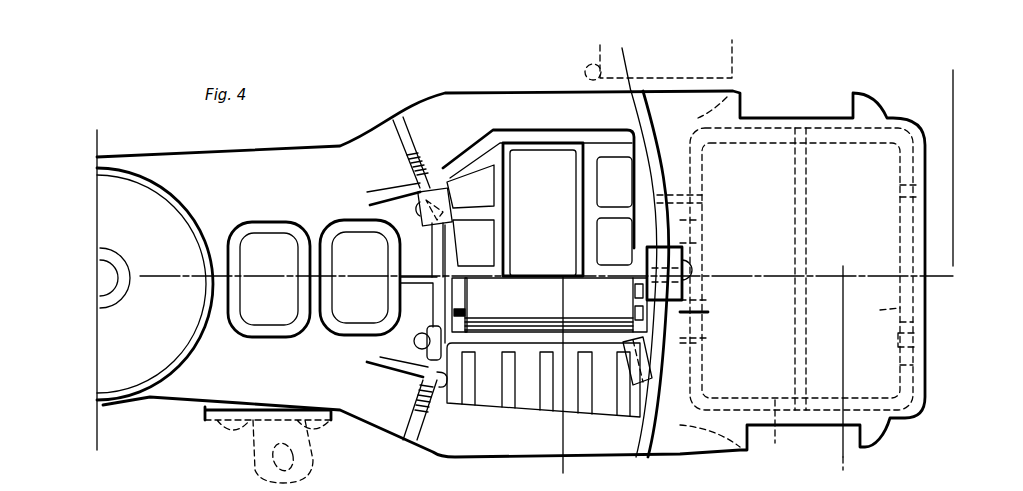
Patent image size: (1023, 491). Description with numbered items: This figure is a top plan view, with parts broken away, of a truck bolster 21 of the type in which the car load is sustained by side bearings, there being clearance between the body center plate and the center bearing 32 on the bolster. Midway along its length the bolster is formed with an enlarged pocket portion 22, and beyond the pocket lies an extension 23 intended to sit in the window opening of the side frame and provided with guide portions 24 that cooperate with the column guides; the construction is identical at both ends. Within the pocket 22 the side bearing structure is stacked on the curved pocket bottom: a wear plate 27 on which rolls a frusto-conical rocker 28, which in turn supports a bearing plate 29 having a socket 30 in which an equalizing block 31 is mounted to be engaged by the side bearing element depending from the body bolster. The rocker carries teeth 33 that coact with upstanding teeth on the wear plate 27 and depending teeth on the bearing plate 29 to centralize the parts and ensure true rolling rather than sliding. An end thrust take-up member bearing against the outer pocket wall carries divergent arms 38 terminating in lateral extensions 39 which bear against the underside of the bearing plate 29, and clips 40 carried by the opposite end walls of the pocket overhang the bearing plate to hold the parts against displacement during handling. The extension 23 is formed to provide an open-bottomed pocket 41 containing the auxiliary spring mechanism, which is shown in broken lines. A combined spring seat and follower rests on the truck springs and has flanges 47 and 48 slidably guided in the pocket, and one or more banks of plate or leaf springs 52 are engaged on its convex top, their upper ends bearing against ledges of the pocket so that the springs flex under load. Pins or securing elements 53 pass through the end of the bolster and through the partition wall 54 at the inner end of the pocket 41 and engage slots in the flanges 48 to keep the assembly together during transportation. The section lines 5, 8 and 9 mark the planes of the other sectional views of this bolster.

The section line 5- 5 is at (594, 266).
The axis line / section line 8- 8 is at (561, 271).
The section line 9- 9 is at (899, 272).
The bolster 21 is at (511, 261).
The enlarged pocket portion 22 is at (422, 388).
The extension 23 is at (796, 269).
The guide portions 24 is at (852, 104).
The wear plate 27 is at (498, 338).
The frusto-conical rocker 28 is at (549, 305).
The bearing plate 29 is at (614, 211).
The socket 30 is at (508, 198).
The equalizing block 31 is at (499, 215).
The center bearing 32 is at (193, 207).
The teeth 33 is at (458, 305).
The divergent arms 38 is at (690, 323).
The lateral extensions 39 is at (652, 365).
The clips 40 is at (448, 200).
The pocket 41 is at (913, 322).
The flanges 47 is at (780, 433).
The flanges 48 is at (910, 365).
The plate or leaf springs 52 is at (913, 303).
The pins or securing elements 53 is at (927, 192).
The partition wall 54 is at (683, 222).